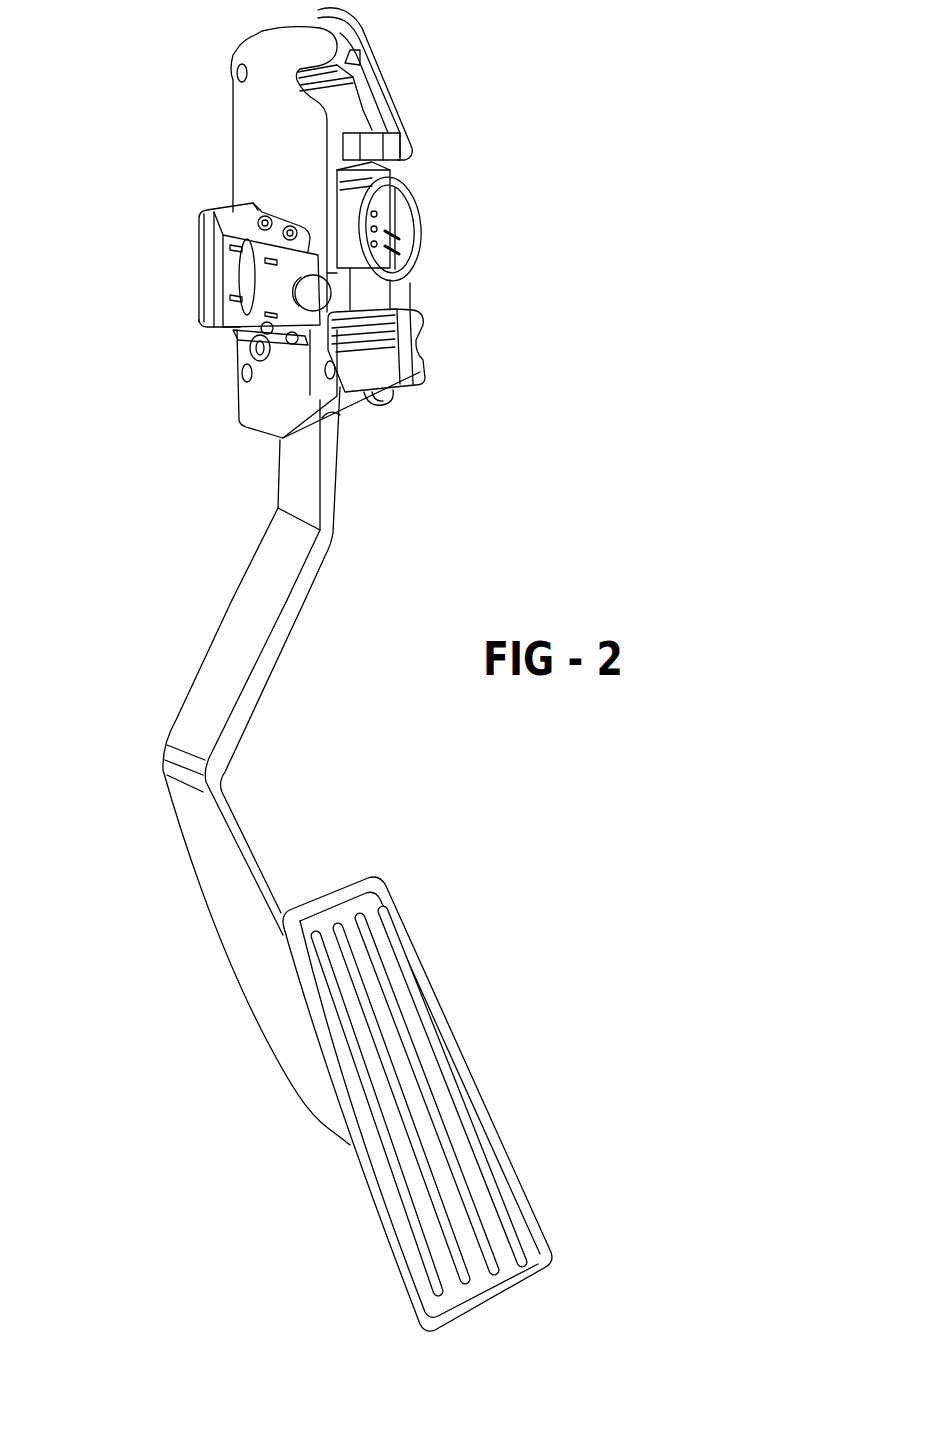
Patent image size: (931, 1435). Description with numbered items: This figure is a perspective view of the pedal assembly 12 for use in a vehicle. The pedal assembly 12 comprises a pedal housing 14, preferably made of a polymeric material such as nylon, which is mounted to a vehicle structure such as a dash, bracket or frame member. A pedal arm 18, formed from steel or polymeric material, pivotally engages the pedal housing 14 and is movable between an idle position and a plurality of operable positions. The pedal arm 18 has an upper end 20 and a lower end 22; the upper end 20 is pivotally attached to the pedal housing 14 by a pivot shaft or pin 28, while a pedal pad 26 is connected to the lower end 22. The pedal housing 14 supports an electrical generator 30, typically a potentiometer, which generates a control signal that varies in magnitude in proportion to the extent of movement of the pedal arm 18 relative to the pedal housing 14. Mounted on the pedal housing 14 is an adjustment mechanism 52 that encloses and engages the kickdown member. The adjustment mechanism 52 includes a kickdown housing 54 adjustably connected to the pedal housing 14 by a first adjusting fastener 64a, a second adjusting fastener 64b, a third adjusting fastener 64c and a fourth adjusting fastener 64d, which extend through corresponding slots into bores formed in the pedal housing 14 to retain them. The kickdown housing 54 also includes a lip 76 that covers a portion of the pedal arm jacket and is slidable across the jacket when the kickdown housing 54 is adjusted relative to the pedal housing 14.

The pedal assembly 12 is at (520, 108).
The pedal housing 14 is at (270, 96).
The pedal arm 18 is at (190, 687).
The upper end 20 is at (258, 450).
The lower end 22 is at (228, 1052).
The pedal pad 26 is at (360, 1174).
The pivot shaft or pin 28 is at (251, 343).
The electrical generator 30 is at (447, 227).
The adjustment mechanism 52 is at (238, 286).
The kickdown housing 54 is at (227, 267).
The first adjusting fastener 64a is at (258, 217).
The second adjusting fastener 64b is at (258, 328).
The third adjusting fastener 64c is at (297, 226).
The fourth adjusting fastener 64d is at (327, 413).
The lip 76 is at (203, 285).